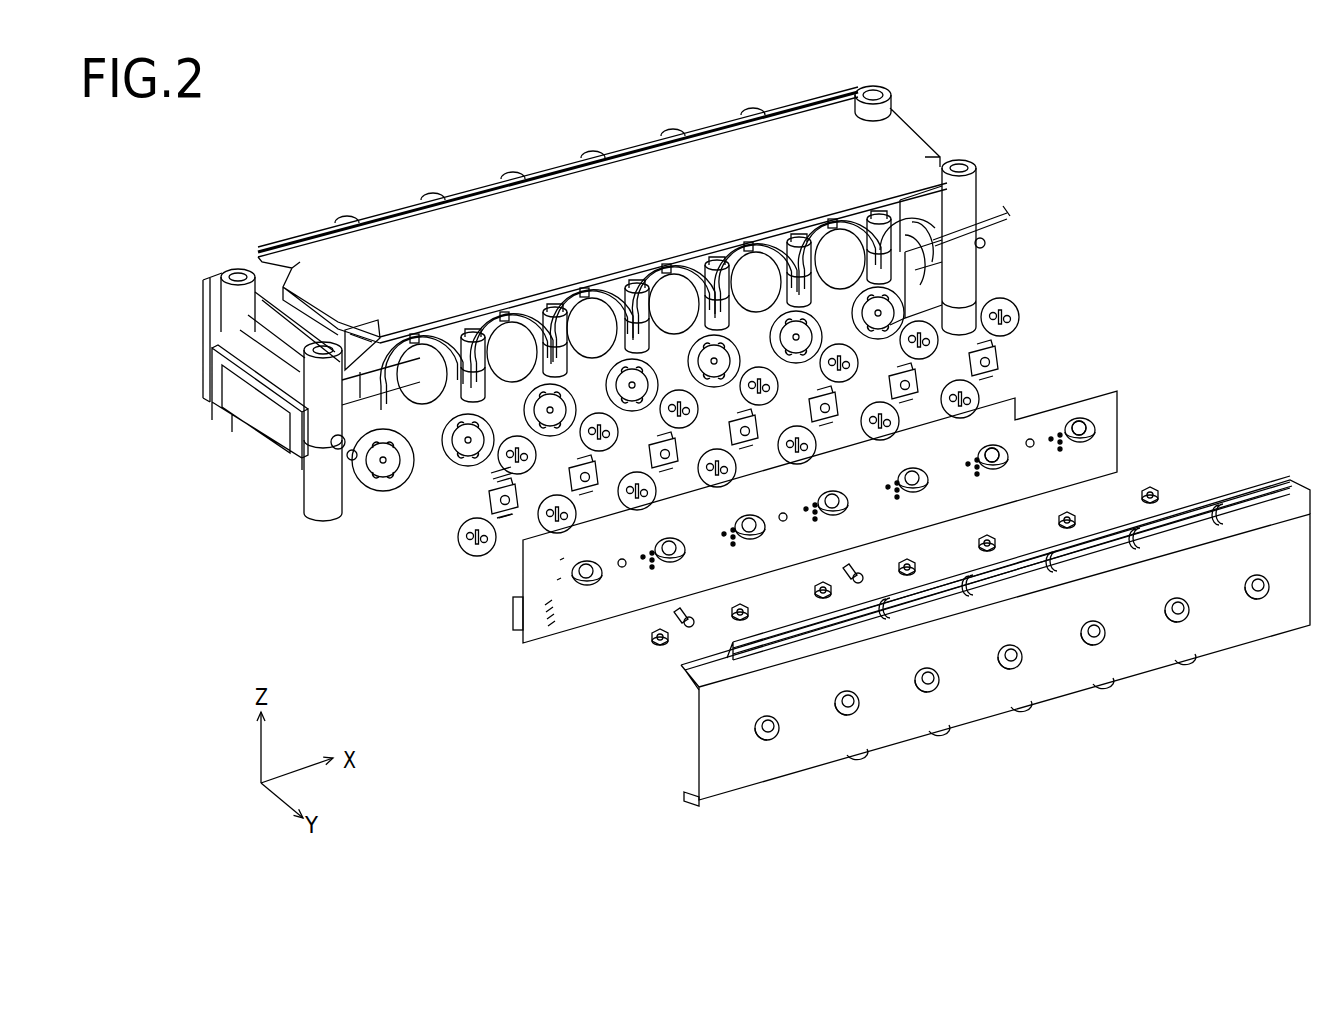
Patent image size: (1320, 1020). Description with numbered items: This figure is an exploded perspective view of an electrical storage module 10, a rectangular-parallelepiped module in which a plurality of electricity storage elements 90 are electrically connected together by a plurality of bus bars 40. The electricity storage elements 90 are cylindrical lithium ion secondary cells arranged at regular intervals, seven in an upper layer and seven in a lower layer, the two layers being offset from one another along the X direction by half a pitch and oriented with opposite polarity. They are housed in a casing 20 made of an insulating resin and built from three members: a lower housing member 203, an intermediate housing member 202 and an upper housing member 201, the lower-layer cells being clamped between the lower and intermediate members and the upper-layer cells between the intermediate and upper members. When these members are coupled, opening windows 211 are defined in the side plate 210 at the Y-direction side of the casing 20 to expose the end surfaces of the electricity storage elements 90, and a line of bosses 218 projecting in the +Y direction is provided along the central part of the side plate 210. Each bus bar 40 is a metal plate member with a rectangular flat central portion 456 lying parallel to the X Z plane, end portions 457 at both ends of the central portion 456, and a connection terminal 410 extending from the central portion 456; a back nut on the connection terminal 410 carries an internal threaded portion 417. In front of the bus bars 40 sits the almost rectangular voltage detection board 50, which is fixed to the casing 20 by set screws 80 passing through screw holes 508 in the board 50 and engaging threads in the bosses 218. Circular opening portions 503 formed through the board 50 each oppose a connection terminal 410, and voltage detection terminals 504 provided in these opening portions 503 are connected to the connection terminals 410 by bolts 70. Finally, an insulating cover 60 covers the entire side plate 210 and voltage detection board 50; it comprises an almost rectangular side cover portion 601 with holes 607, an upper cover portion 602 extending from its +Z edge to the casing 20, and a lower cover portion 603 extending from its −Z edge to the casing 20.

The electrical storage module 10 is at (292, 142).
The casing 20 is at (335, 273).
The upper housing member 201 is at (277, 323).
The intermediate housing member 202 is at (320, 450).
The lower housing member 203 is at (320, 493).
The side plate 210 is at (707, 252).
The opening window 211 is at (653, 277).
The boss 218 is at (451, 345).
The electricity storage element 90 is at (580, 313).
The bus bar 40 is at (475, 573).
The connection terminal 410 is at (505, 522).
The internal threaded portion 417 is at (509, 513).
The central portion 456 is at (500, 490).
The end portion 457 is at (505, 458).
The voltage detection board 50 is at (557, 643).
The opening portion 503 is at (1010, 448).
The voltage detection terminal 504 is at (997, 443).
The screw hole 508 is at (622, 567).
The cover 60 is at (810, 747).
The side cover portion 601 is at (1047, 663).
The upper cover portion 602 is at (690, 682).
The lower cover portion 603 is at (687, 800).
The hole 607 is at (1100, 647).
The bolt 70 is at (648, 655).
The set screw 80 is at (685, 632).